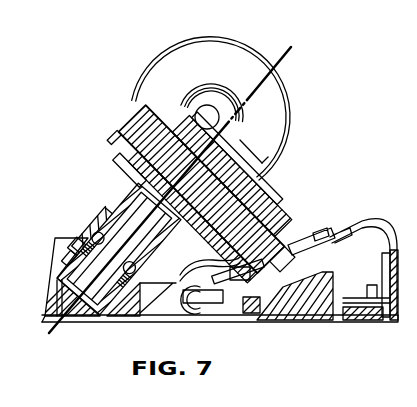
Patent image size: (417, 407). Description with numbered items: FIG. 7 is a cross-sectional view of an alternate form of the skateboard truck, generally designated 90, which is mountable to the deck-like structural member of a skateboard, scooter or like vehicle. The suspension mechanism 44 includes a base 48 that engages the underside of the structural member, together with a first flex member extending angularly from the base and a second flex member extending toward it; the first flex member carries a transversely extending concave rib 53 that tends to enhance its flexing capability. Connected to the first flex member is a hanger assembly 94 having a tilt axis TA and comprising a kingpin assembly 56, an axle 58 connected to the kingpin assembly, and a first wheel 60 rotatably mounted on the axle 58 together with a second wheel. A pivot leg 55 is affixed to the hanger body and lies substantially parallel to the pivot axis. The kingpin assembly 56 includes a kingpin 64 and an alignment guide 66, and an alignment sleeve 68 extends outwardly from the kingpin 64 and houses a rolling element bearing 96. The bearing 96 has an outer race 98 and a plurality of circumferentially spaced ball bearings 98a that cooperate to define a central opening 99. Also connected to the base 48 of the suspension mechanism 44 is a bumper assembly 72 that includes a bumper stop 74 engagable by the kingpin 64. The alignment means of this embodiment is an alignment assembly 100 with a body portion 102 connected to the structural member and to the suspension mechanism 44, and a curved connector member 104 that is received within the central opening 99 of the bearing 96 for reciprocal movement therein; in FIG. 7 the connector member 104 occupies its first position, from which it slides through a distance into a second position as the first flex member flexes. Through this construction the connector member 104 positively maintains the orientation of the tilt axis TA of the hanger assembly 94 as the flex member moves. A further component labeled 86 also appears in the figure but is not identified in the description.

The suspension mechanism 44 is at (374, 216).
The base 48 is at (221, 321).
The concave rib 53 is at (208, 256).
The pivot leg 55 is at (125, 198).
The kingpin assembly 56 is at (108, 116).
The axle 58 is at (180, 107).
The first wheel 60 is at (163, 70).
The kingpin 64 is at (133, 117).
The alignment guide 66 is at (270, 274).
The alignment sleeve 68 is at (103, 212).
The bumper assembly 72 is at (357, 336).
The bumper stop 74 is at (288, 321).
The arm 86 is at (308, 246).
The truck 90 is at (318, 125).
The hanger assembly 94 is at (262, 130).
The bearing 96 is at (131, 313).
The outer race 98 is at (80, 233).
The ball bearings 98a is at (77, 238).
The central opening 99 is at (73, 270).
The alignment assembly 100 is at (70, 330).
The body portion 102 is at (95, 292).
The curved connector member 104 is at (95, 217).
The tilt axis TA is at (290, 46).